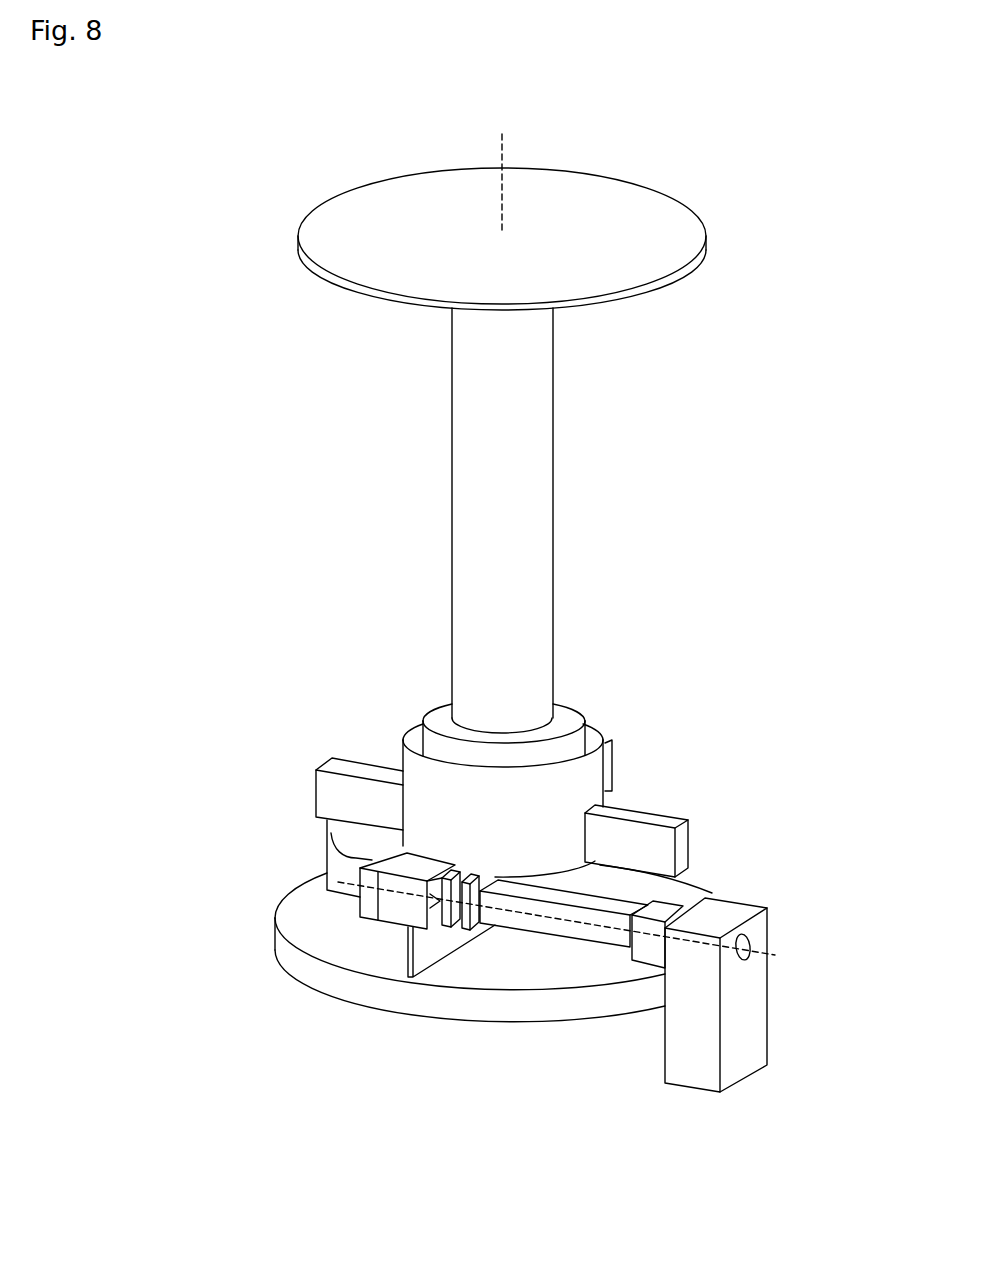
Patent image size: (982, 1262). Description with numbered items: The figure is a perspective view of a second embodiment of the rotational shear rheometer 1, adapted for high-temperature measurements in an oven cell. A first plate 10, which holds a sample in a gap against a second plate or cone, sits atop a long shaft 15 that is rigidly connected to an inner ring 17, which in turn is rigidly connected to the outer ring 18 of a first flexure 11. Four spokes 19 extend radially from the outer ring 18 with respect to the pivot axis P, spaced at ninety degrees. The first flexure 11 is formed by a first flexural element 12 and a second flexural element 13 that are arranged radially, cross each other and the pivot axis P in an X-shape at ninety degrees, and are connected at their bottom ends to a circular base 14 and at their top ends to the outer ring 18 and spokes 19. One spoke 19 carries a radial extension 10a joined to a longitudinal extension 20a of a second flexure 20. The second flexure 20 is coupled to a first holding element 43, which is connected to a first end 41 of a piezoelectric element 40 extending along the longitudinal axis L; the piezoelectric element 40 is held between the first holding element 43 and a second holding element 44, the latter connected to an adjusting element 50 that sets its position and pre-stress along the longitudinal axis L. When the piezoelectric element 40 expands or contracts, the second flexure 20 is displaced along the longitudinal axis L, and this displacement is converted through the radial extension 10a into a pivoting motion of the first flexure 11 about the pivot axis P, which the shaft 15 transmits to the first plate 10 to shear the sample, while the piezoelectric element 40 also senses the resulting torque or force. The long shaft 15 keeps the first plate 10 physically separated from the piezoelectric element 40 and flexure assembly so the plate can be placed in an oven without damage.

The rotational shear rheometer 1 is at (352, 152).
The pivot axis P is at (501, 167).
The first plate 10 is at (660, 223).
The radial extension 10a is at (338, 858).
The first flexure 11 is at (252, 850).
The first flexural element 12 is at (332, 866).
The second flexural element 13 is at (425, 960).
The circular base 14 is at (292, 958).
The shaft 15 is at (533, 484).
The inner ring 17 is at (560, 712).
The outer ring 18 is at (593, 776).
The spokes 19 is at (662, 821).
The second flexure 20 is at (447, 928).
The longitudinal extension 20a is at (398, 903).
The piezoelectric element 40 is at (577, 928).
The first end 41 is at (478, 918).
The first holding element 43 is at (465, 933).
The second holding element 44 is at (648, 938).
The adjusting element 50 is at (700, 975).
The longitudinal axis L is at (569, 926).